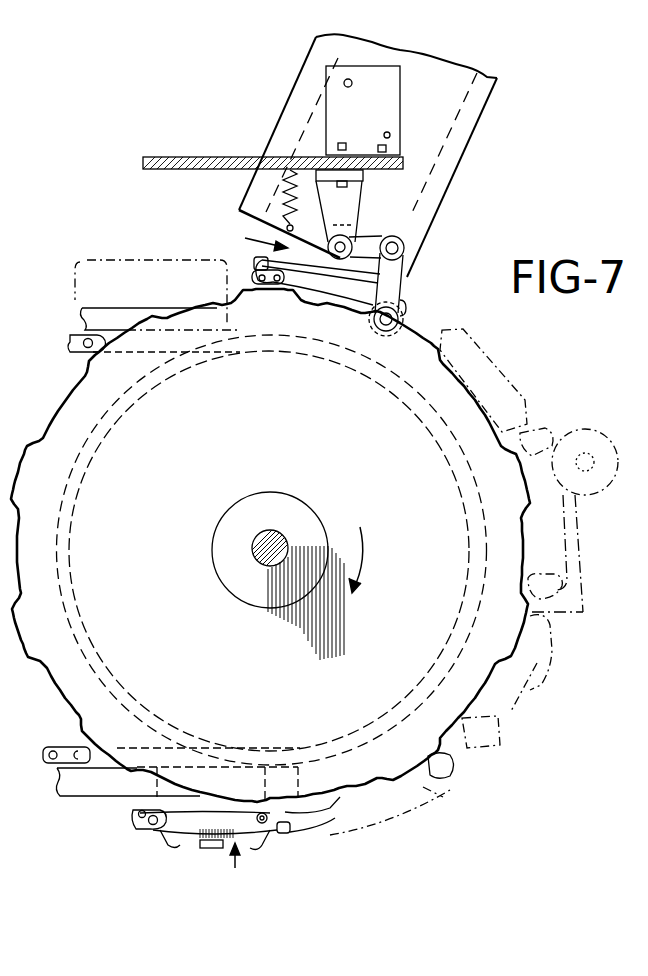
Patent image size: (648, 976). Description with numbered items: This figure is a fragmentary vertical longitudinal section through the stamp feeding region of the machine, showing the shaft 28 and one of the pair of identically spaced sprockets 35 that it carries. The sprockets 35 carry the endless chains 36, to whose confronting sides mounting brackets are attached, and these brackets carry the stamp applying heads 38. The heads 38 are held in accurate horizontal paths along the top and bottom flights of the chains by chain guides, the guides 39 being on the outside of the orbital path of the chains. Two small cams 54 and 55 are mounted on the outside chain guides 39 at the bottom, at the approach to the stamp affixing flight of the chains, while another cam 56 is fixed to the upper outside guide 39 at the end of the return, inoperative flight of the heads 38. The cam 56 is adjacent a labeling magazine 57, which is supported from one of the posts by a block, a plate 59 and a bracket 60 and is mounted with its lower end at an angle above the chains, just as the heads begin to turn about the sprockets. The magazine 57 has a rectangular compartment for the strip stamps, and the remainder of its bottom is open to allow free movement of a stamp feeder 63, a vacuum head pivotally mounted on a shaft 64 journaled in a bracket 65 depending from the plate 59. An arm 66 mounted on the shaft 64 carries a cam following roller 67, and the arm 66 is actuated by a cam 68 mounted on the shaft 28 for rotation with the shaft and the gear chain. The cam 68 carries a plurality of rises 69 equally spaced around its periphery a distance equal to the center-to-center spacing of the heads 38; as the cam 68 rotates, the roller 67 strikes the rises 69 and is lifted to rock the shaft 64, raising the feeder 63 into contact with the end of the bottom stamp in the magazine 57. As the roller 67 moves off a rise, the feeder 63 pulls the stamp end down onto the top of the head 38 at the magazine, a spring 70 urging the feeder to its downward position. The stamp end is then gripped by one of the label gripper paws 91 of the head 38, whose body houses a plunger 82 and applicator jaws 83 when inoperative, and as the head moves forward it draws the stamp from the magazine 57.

The shaft 28 is at (278, 542).
The sprockets 35 is at (110, 407).
The endless chains 36 is at (70, 338).
The stamp applying heads 38 is at (240, 878).
The chain guides 39 is at (80, 312).
The cam 54 is at (316, 812).
The cam 55 is at (185, 803).
The cam 56 is at (333, 300).
The labeling magazine 57 is at (488, 115).
The plate 59 is at (196, 157).
The bracket 60 is at (393, 115).
The stamp feeder 63 is at (358, 240).
The shaft 64 is at (350, 232).
The bracket 65 is at (367, 182).
The arm 66 is at (404, 232).
The cam following roller 67 is at (405, 312).
The cam 68 is at (512, 545).
The rises 69 is at (440, 340).
The spring 70 is at (283, 190).
The plunger 82 is at (208, 850).
The applicator jaws 83 is at (168, 846).
The label gripper paws 91 is at (252, 266).